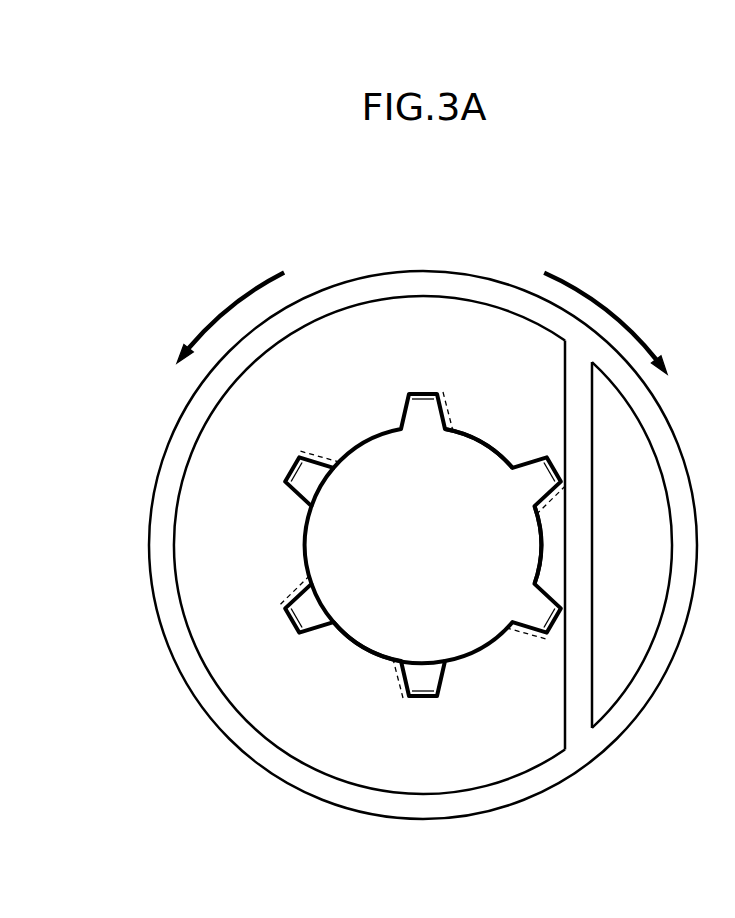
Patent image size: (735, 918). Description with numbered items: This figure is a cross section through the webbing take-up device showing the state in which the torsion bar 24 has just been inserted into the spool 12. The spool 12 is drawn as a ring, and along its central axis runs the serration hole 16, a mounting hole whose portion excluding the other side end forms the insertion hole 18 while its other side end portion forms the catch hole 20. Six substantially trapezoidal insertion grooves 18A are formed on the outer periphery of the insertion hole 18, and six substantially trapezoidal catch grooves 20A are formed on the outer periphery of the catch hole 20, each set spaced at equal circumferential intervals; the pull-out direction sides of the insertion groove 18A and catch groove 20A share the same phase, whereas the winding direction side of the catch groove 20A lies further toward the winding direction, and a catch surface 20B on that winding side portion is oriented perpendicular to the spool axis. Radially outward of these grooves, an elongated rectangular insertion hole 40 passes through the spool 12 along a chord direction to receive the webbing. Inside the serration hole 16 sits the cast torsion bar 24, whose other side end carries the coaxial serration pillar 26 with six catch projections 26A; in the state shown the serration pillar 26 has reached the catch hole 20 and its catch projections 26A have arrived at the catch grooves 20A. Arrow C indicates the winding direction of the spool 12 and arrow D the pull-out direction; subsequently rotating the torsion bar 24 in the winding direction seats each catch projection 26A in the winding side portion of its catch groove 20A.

The spool 12 is at (437, 272).
The serration hole 16 is at (382, 452).
The insertion hole 18 is at (308, 535).
The insertion groove 18A is at (560, 478).
The catch hole 20 is at (493, 452).
The catch groove 20A is at (300, 446).
The catch surface 20B is at (442, 400).
The torsion bar 24 is at (546, 562).
The serration pillar 26 is at (352, 638).
The catch projection 26A is at (420, 393).
The insertion hole 40 is at (590, 613).
The pull-out direction D is at (218, 313).
The winding direction C is at (607, 312).